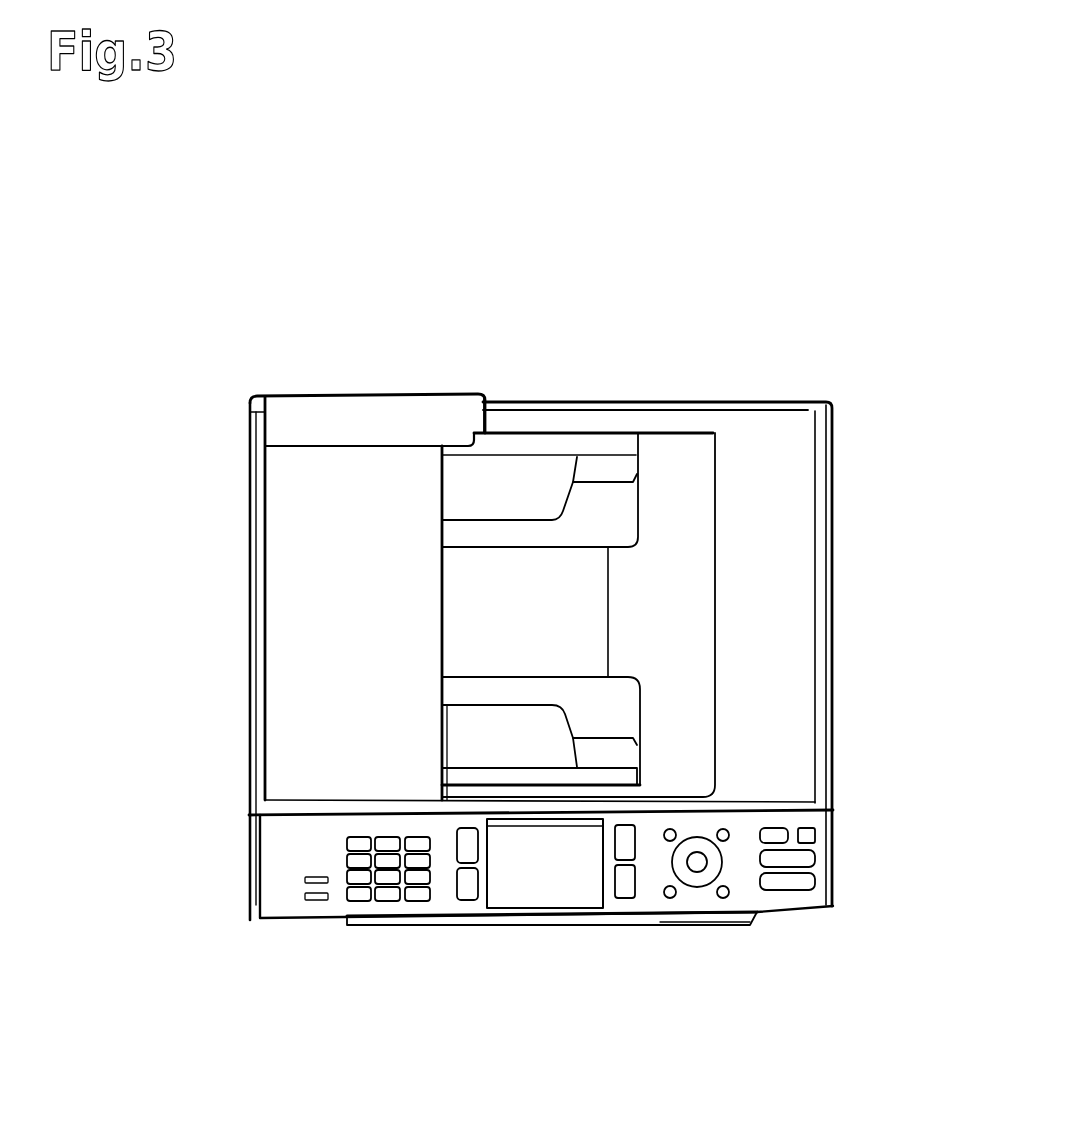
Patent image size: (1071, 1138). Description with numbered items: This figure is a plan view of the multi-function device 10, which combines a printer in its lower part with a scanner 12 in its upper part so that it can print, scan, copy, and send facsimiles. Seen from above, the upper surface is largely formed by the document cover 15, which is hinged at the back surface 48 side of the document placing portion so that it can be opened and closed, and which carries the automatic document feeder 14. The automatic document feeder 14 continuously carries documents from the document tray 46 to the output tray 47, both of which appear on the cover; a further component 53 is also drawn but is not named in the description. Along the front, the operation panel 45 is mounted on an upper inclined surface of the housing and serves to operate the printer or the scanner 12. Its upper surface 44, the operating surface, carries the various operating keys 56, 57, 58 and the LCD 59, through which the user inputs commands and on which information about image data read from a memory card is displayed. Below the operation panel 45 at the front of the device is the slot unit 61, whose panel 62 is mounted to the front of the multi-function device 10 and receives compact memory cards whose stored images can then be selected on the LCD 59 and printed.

The multi-function device 10 is at (753, 262).
The scanner 12 is at (249, 632).
The automatic document feeder 14 is at (300, 532).
The document cover 15 is at (770, 452).
The upper surface 44 is at (278, 903).
The operation panel 45 is at (285, 845).
The document tray 46 is at (513, 490).
The output tray 47 is at (683, 477).
The back surface 48 is at (800, 394).
The upper tray compartment 53 is at (563, 447).
The operating key 56 is at (625, 878).
The operating key 57 is at (792, 882).
The operating key 58 is at (395, 898).
The LCD 59 is at (553, 862).
The slot unit 61 is at (710, 919).
The panel 62 is at (442, 927).